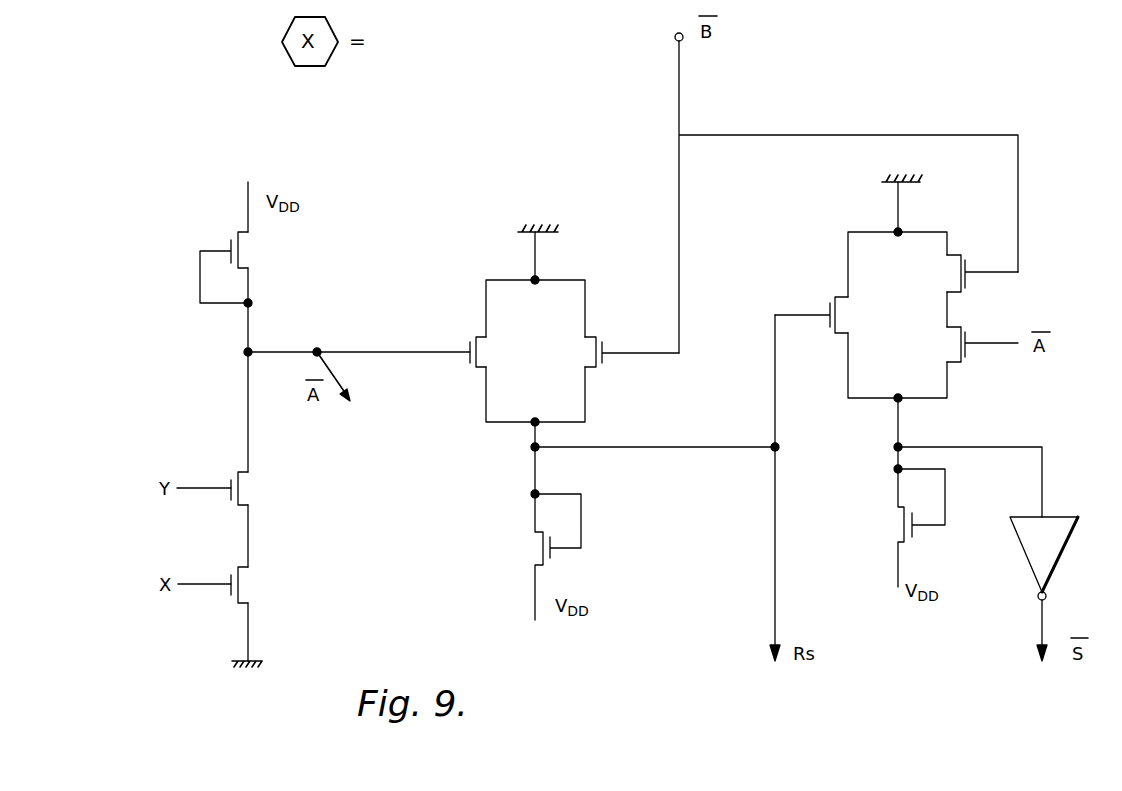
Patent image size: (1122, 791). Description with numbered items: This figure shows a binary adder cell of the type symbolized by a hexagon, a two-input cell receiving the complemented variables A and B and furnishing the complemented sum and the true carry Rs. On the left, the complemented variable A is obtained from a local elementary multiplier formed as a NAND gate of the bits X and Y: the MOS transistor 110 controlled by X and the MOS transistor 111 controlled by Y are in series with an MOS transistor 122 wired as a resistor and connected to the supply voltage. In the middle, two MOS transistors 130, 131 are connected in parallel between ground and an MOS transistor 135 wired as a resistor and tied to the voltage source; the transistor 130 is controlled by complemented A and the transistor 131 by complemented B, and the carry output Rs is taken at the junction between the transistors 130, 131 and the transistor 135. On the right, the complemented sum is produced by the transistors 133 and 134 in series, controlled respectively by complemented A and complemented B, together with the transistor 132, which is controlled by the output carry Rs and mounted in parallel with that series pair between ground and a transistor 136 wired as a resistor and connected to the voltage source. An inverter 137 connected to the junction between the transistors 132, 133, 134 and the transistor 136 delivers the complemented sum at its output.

The MOS transistor 110 is at (240, 583).
The MOS transistor 111 is at (240, 484).
The MOS transistor wired as a resistor 122 is at (241, 247).
The MOS transistor 130 is at (478, 343).
The MOS transistor 131 is at (587, 353).
The transistor 132 is at (838, 307).
The transistor 133 is at (957, 273).
The transistor 134 is at (957, 340).
The MOS transistor wired as a resistor 135 is at (542, 545).
The transistor wired as a resistor 136 is at (905, 522).
The inverter 137 is at (1022, 552).